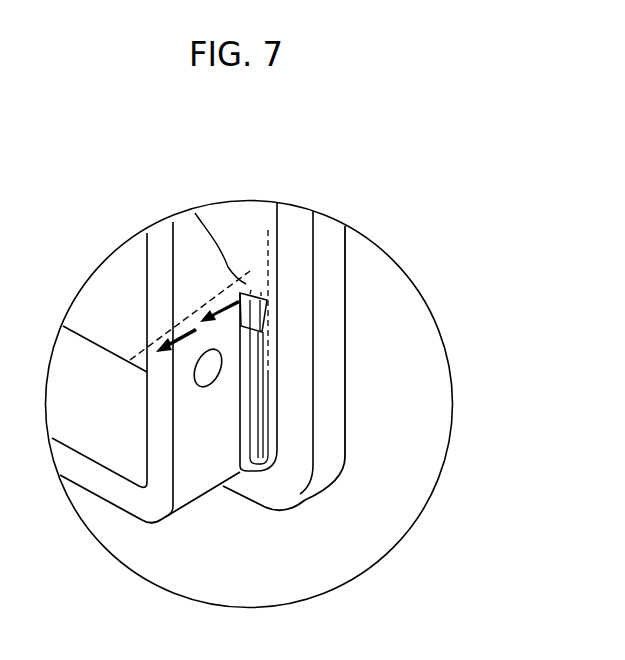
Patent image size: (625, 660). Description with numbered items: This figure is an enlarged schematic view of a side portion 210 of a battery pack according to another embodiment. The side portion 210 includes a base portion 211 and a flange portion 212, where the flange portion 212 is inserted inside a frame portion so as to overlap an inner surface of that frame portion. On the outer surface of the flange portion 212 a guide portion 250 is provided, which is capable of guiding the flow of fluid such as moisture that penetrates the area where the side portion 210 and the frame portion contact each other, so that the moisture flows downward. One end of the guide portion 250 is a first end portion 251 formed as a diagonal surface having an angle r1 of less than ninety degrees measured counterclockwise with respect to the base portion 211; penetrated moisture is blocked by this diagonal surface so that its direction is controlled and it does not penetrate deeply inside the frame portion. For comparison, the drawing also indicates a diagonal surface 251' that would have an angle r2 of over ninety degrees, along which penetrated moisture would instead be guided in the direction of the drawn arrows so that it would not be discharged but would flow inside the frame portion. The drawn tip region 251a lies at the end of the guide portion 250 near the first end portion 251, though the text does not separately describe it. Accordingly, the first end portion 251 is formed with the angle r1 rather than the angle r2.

The side portion 210 is at (349, 267).
The base portion 211 is at (332, 434).
The flange portion 212 is at (198, 473).
The guide portion 250 is at (246, 407).
The first end portion 251 is at (221, 229).
The diagonal surface 251' is at (190, 269).
The tab of protrusion 251a is at (248, 316).
The angle r1 is at (250, 290).
The angle r2 is at (260, 292).